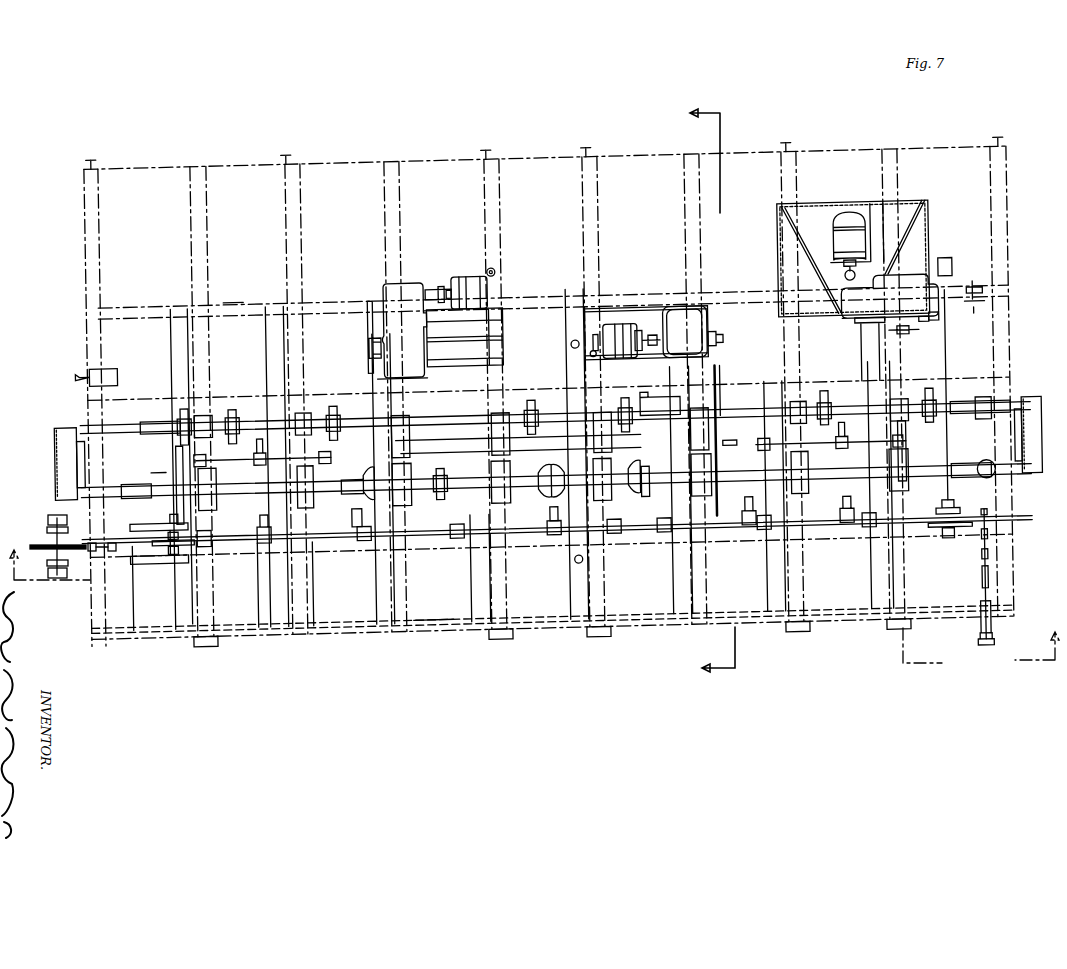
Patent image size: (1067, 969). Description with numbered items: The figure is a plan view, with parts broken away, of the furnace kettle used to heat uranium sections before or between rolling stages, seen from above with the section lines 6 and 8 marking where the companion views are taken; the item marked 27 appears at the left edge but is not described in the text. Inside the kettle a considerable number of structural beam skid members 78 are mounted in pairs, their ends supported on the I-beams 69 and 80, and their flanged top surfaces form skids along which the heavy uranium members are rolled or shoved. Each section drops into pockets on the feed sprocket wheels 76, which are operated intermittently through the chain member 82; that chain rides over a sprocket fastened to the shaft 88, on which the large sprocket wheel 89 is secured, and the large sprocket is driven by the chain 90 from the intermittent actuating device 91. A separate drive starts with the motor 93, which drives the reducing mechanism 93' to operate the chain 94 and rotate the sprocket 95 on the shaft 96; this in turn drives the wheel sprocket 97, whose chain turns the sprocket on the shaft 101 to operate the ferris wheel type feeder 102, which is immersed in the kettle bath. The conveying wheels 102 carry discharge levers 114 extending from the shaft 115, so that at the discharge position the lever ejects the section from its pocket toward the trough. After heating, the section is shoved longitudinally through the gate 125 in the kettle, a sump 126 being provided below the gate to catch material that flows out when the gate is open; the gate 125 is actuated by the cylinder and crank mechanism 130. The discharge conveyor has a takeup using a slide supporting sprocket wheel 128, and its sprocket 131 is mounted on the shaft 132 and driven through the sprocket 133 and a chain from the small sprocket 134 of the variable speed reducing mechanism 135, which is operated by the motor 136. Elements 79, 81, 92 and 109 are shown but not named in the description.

The section line 6- 6 is at (697, 396).
The section line 8- 8 is at (532, 598).
The shaft assembly 27 is at (37, 545).
The I-beam 69 is at (235, 297).
The feed sprocket wheel 76 is at (178, 412).
The structural beam skid member 78 is at (189, 300).
The bearing 79 is at (238, 410).
The I-beam 80 is at (428, 617).
The end box 81 is at (118, 372).
The chain member 82 is at (660, 400).
The shaft 88 is at (520, 418).
The large sprocket wheel 89 is at (722, 410).
The chain 90 is at (724, 360).
The intermittent actuating device 91 is at (672, 313).
The motor 92 is at (620, 326).
The motor 93 is at (463, 301).
The reducing mechanism 93' is at (384, 307).
The chain 94 is at (400, 376).
The sprocket 95 is at (355, 491).
The shaft 96 is at (478, 491).
The wheel sprocket 97 is at (439, 491).
The shaft 101 is at (248, 489).
The ferris wheel type feeder 102 is at (175, 465).
The bearing block 109 is at (215, 460).
The discharge lever 114 is at (355, 540).
The shaft 115 is at (252, 540).
The gate 125 is at (986, 530).
The sump 126 is at (986, 522).
The slide supporting sprocket wheel 128 is at (160, 540).
The cylinder and crank mechanism 130 is at (977, 630).
The sprocket 131 is at (932, 540).
The shaft 132 is at (960, 340).
The sprocket 133 is at (952, 325).
The small sprocket 134 is at (905, 345).
The variable speed reducing mechanism 135 is at (898, 318).
The motor 136 is at (848, 220).